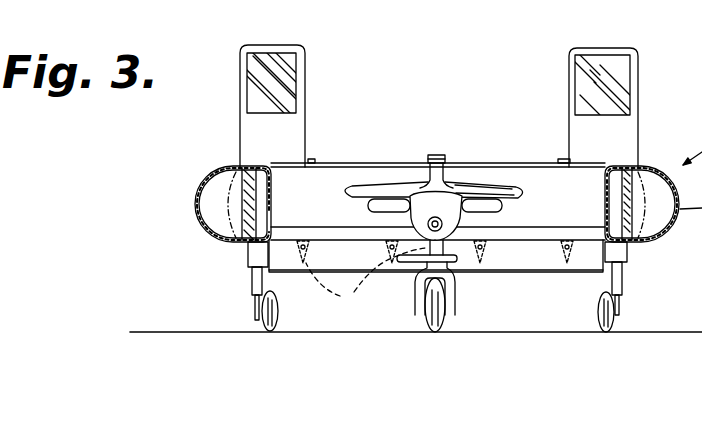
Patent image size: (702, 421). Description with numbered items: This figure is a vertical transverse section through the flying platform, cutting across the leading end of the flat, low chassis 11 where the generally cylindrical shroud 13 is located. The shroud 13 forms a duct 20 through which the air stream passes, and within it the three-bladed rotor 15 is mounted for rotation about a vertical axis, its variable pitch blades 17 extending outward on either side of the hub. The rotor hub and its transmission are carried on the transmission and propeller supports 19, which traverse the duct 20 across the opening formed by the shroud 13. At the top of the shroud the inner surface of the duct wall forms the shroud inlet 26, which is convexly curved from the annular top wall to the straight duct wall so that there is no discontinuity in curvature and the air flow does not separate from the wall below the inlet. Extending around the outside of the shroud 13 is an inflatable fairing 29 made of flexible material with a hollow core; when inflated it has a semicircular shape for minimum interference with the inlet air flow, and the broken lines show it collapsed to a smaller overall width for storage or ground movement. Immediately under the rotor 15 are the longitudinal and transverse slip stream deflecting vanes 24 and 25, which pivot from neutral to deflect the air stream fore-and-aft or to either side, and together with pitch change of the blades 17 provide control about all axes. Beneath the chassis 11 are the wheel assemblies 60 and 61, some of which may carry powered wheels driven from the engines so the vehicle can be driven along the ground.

The chassis 11 is at (545, 245).
The shroud 13 is at (268, 244).
The rotor 15 is at (506, 203).
The variable pitch blades 17 is at (364, 184).
The transmission and propeller supports 19 is at (337, 217).
The duct 20 is at (595, 182).
The longitudinal slip stream deflecting vanes 24 is at (435, 277).
The transverse slip stream deflecting vanes 25 is at (490, 270).
The shroud inlet 26 is at (250, 178).
The inflatable fairing 29 is at (197, 200).
The forward wheel assemblies 60 is at (279, 310).
The wheel assembly 61 is at (421, 318).